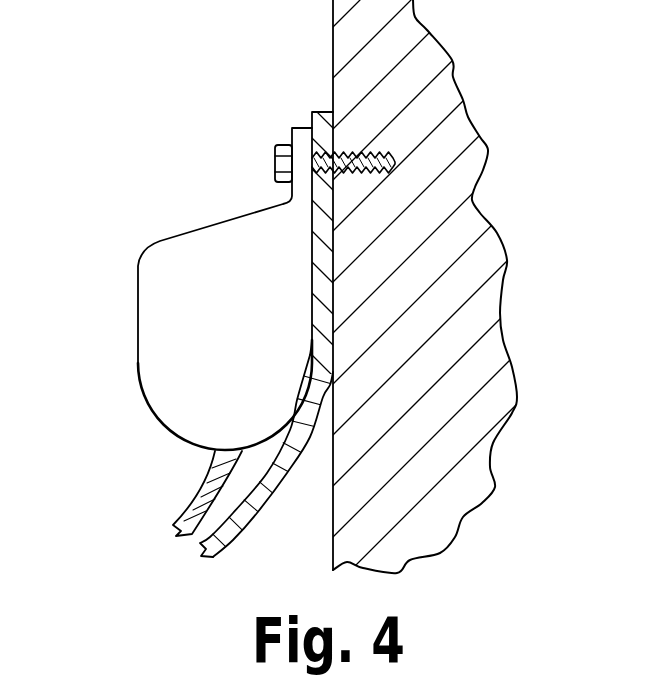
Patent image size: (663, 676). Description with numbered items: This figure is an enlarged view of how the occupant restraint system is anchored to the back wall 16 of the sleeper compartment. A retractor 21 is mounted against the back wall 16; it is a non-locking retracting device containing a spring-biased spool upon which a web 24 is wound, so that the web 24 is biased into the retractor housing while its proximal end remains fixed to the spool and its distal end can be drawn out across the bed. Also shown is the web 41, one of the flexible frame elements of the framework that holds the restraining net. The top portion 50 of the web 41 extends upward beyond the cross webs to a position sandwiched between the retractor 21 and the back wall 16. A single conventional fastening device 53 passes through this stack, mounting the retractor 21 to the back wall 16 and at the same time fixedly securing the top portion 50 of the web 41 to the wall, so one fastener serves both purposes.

The back wall 16 is at (358, 73).
The top portion of web 50 is at (315, 252).
The web 41 is at (240, 527).
The retractor 21 is at (175, 275).
The web 24 is at (207, 503).
The fastening device 53 is at (283, 162).